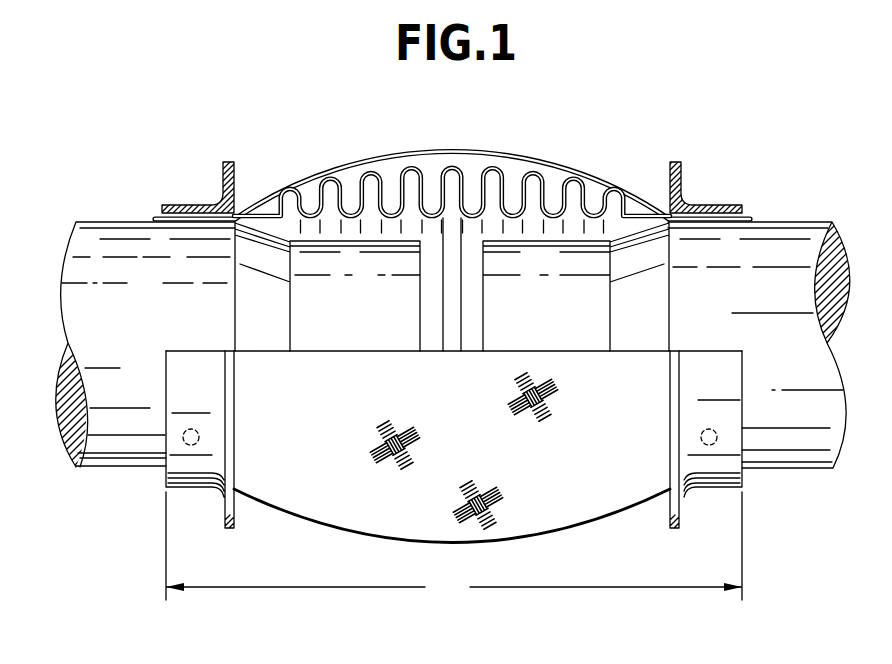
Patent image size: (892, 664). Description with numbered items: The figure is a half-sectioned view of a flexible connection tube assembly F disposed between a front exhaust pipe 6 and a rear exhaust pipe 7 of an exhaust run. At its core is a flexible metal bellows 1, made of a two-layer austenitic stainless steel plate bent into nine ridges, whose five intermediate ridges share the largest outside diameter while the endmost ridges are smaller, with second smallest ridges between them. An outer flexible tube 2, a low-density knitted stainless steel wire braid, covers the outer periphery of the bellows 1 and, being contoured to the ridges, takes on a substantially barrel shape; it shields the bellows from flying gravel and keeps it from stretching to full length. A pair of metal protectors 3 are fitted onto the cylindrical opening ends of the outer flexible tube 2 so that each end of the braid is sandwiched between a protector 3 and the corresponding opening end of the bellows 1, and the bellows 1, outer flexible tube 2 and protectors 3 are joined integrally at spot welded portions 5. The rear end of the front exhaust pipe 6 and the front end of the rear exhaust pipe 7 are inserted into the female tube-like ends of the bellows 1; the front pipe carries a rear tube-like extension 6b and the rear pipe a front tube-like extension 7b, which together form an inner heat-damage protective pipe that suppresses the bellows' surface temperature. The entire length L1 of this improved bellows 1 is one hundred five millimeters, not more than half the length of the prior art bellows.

The metal bellows 1 is at (544, 188).
The outer flexible tube 2 is at (398, 150).
The metal protector 3 is at (223, 183).
The spot welded portion 5 is at (188, 444).
The front exhaust pipe 6 is at (98, 222).
The rear exhaust pipe 7 is at (790, 223).
The rear tube-like extension 6b is at (336, 333).
The front tube-like extension 7b is at (578, 333).
The flexible connection tube assembly F is at (543, 152).
The entire length of the improved bellows L1 is at (454, 546).